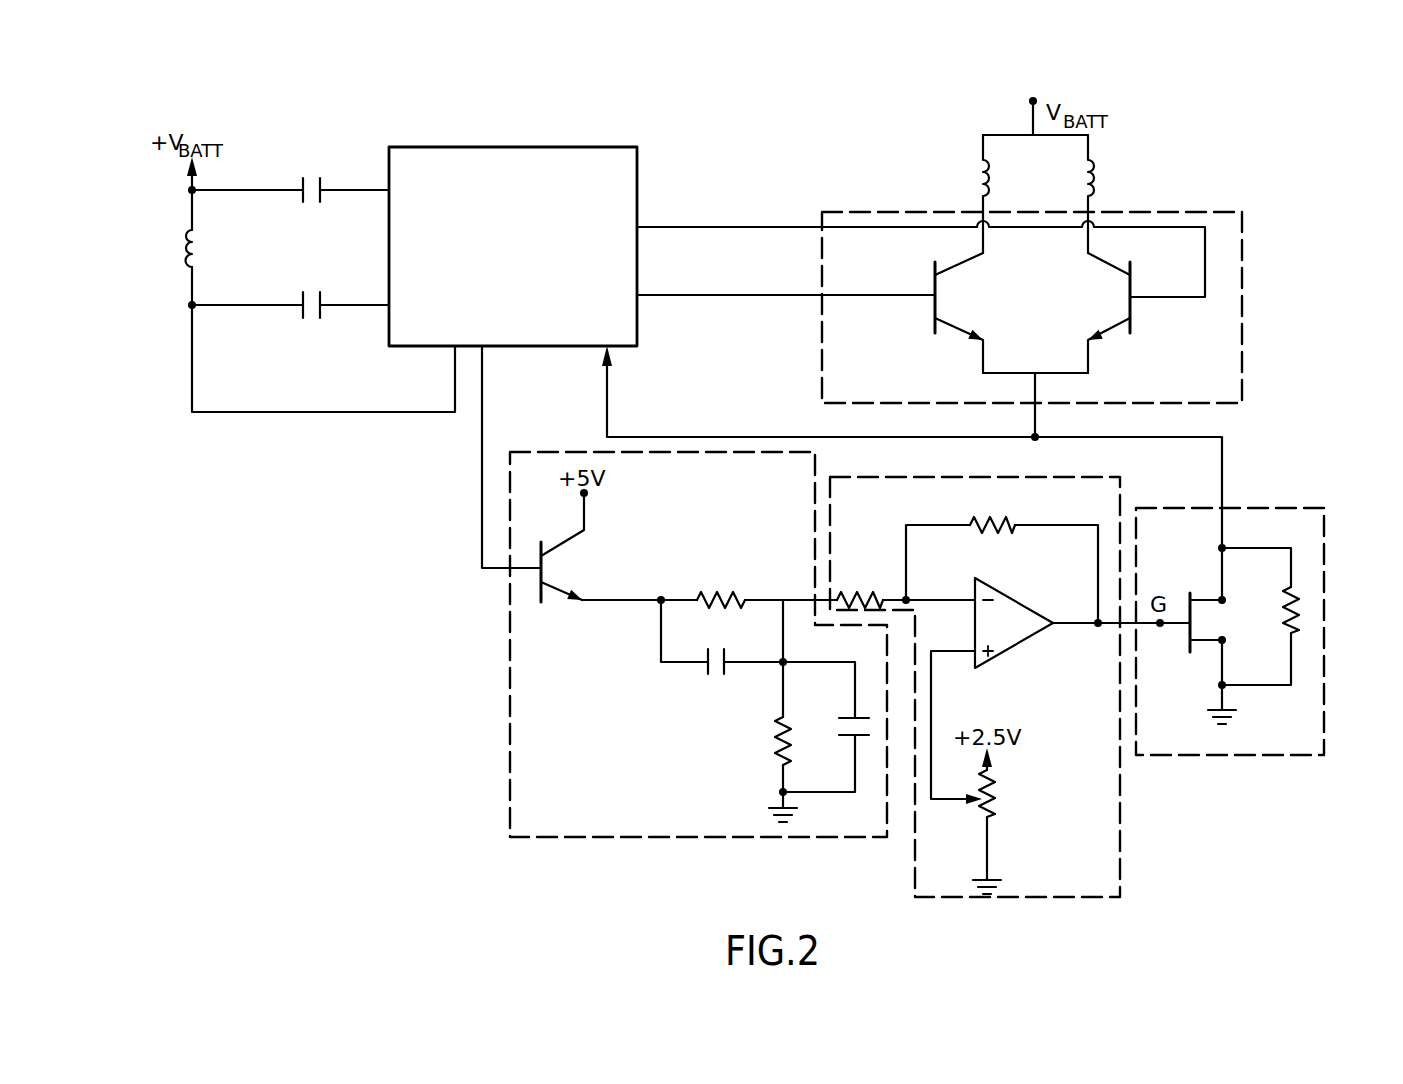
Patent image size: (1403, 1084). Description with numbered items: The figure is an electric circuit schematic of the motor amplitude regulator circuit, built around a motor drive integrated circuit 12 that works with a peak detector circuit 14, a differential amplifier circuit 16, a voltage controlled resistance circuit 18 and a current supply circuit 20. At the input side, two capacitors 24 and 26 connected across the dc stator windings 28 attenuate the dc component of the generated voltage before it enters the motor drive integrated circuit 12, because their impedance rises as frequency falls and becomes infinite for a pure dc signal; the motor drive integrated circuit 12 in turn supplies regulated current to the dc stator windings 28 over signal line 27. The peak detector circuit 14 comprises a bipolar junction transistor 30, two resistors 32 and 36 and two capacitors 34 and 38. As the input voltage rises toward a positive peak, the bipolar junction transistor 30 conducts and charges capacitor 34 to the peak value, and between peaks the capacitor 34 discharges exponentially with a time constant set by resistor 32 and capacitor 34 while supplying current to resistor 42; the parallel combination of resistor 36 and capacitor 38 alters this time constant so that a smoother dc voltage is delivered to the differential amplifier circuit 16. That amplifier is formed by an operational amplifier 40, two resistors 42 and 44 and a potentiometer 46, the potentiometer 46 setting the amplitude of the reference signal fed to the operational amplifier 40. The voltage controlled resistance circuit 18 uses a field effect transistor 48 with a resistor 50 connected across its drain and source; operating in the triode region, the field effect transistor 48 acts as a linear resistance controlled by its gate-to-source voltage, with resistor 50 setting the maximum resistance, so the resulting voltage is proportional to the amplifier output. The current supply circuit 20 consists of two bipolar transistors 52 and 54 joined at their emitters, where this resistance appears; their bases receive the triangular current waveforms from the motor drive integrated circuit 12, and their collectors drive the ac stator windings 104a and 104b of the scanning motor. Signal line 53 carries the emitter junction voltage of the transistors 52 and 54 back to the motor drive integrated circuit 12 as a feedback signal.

The motor drive integrated circuit 12 is at (637, 162).
The peak detector circuit 14 is at (510, 758).
The differential amplifier circuit 16 is at (1122, 822).
The voltage controlled resistance circuit 18 is at (1325, 626).
The current supply circuit 20 is at (1242, 266).
The capacitor 24 is at (308, 176).
The capacitor 26 is at (312, 290).
The signal line 27 is at (328, 413).
The dc stator windings 28 is at (185, 268).
The bipolar junction transistor 30 is at (563, 540).
The resistor 32 is at (712, 590).
The capacitor 34 is at (700, 670).
The resistor 36 is at (775, 740).
The capacitor 38 is at (845, 735).
The operational amplifier 40 is at (1005, 595).
The resistor 42 is at (868, 590).
The resistor 44 is at (985, 518).
The potentiometer 46 is at (992, 810).
The field effect transistor 48 is at (1190, 615).
The resistor 50 is at (1285, 618).
The bipolar transistor 52 is at (933, 283).
The signal line 53 is at (610, 397).
The bipolar transistor 54 is at (1135, 283).
The ac stator winding 104a is at (975, 176).
The ac stator winding 104b is at (1090, 188).